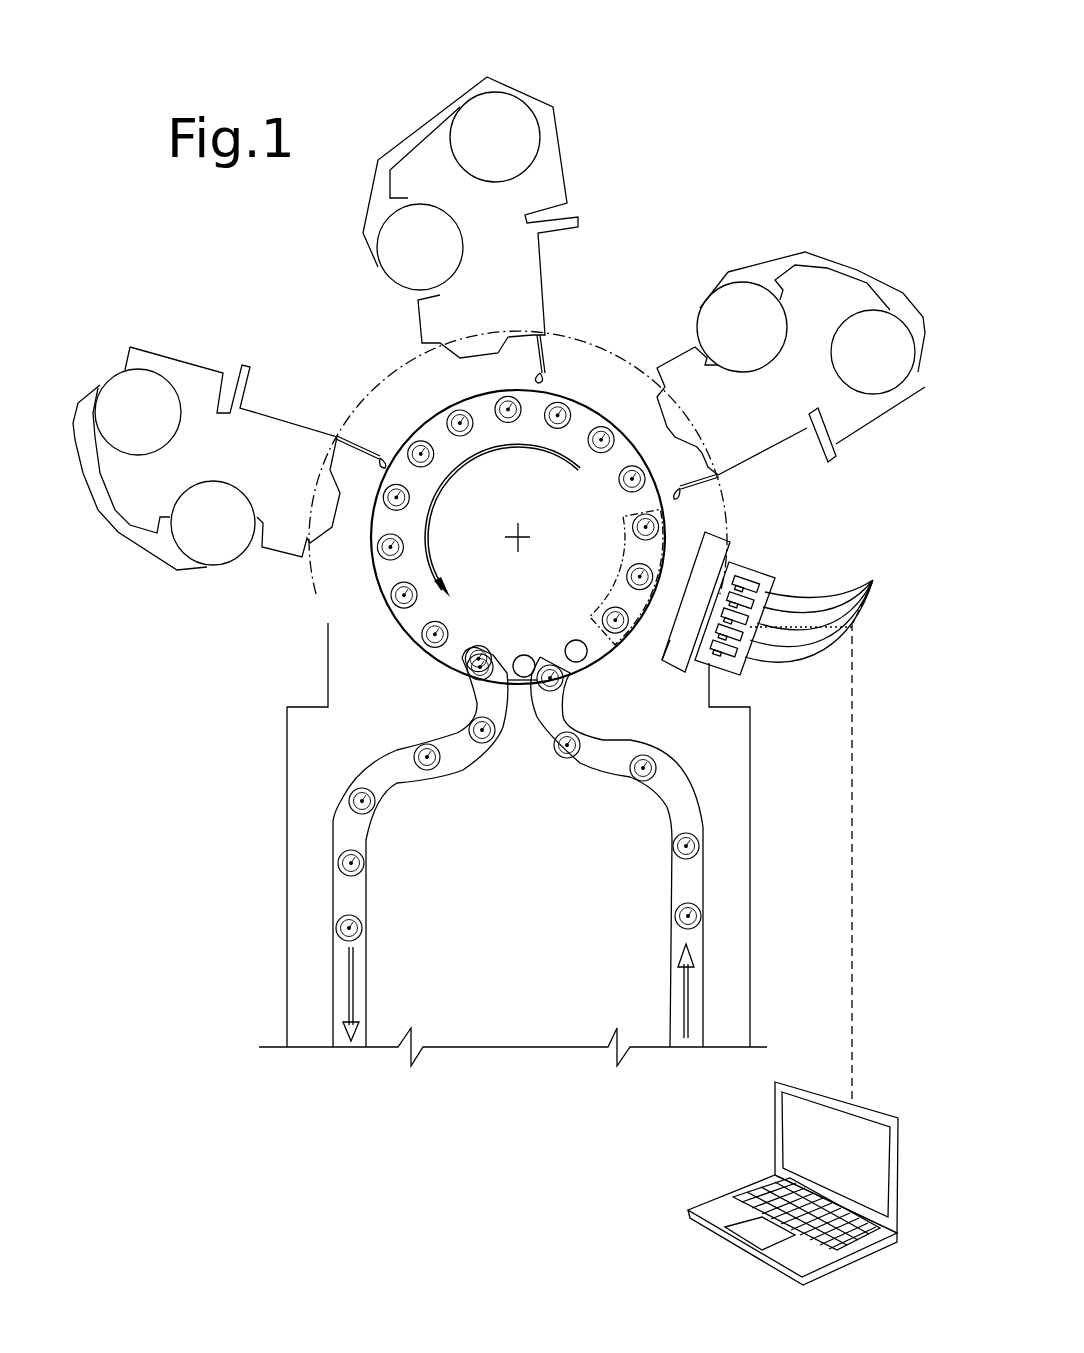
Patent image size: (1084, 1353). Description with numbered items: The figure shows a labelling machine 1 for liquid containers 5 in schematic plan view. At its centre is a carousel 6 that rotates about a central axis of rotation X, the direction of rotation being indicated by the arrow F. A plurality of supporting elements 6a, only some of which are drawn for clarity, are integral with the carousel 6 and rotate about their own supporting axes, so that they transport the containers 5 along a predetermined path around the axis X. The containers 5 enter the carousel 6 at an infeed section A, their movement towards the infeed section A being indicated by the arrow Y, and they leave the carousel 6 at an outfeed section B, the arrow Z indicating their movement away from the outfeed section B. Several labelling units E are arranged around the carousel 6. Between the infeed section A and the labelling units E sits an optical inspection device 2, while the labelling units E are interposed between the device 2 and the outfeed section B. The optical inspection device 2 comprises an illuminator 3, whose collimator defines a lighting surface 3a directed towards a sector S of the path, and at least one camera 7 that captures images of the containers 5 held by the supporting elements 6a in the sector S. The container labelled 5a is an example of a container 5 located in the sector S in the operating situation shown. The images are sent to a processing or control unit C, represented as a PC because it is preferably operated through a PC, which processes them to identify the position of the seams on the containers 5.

The labelling machine 1 is at (178, 803).
The optical inspection device 2 is at (773, 552).
The illuminator 3 is at (735, 540).
The lighting surface 3a is at (670, 633).
The liquid container 5 is at (455, 420).
The container in the sector 5a is at (680, 527).
The carousel 6 is at (413, 623).
The supporting element 6a is at (387, 490).
The camera 7 is at (873, 580).
The labelling unit E is at (383, 105).
The central axis of rotation X is at (521, 534).
The arrow indicating carousel rotation F is at (453, 482).
The sector of the path S is at (607, 570).
The infeed section A is at (548, 715).
The outfeed section B is at (490, 703).
The arrow indicating infeed movement Y is at (669, 994).
The arrow indicating outfeed movement Z is at (334, 989).
The processing or control unit C is at (688, 1263).